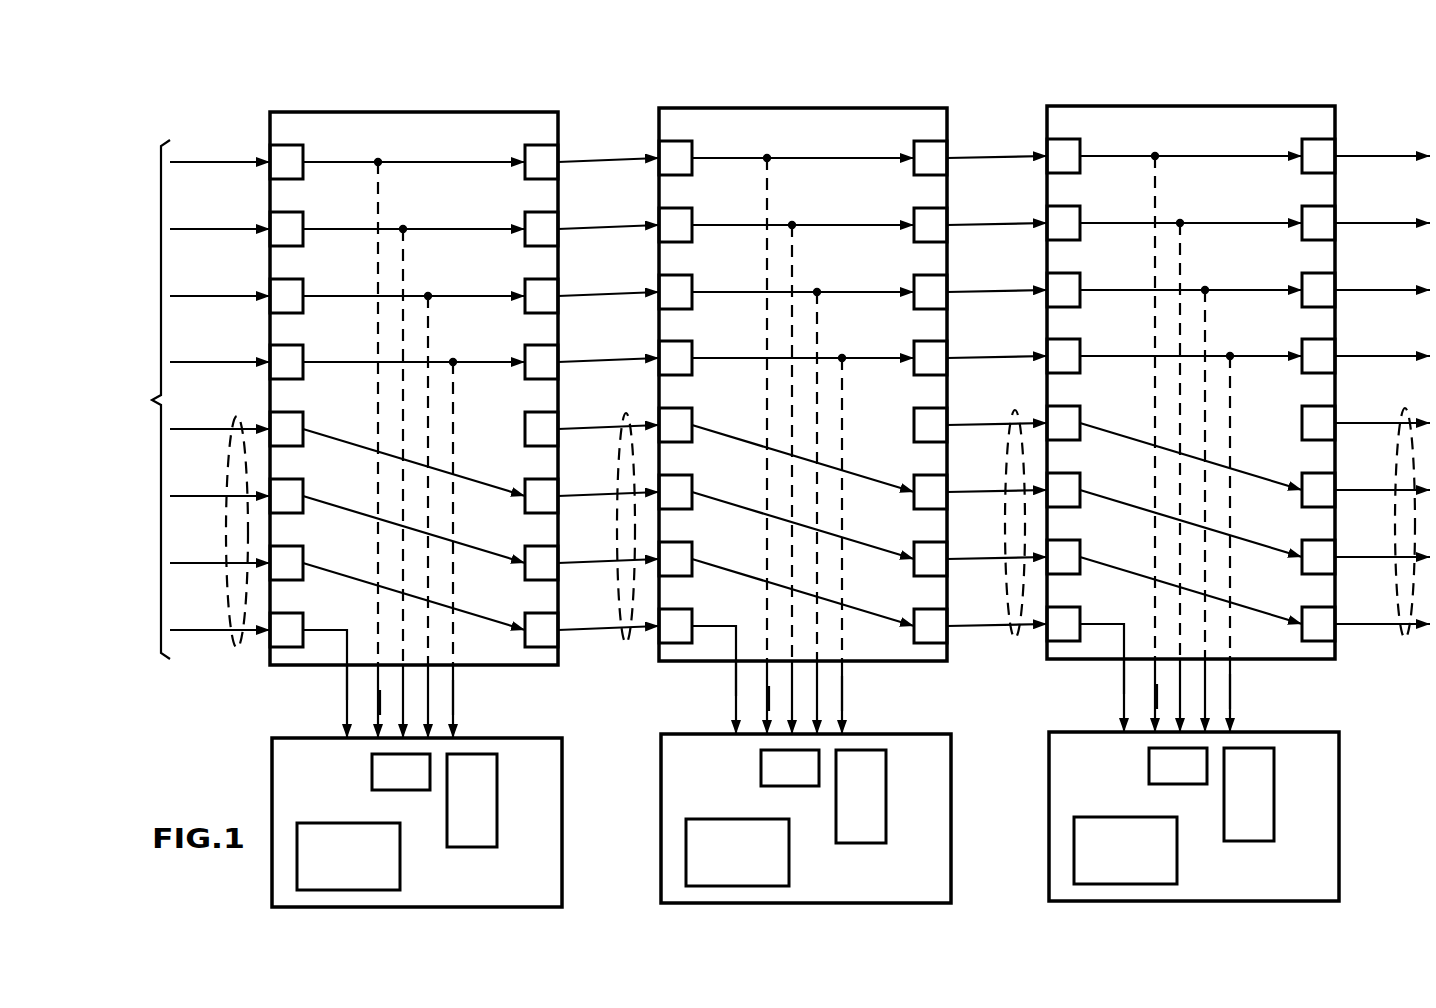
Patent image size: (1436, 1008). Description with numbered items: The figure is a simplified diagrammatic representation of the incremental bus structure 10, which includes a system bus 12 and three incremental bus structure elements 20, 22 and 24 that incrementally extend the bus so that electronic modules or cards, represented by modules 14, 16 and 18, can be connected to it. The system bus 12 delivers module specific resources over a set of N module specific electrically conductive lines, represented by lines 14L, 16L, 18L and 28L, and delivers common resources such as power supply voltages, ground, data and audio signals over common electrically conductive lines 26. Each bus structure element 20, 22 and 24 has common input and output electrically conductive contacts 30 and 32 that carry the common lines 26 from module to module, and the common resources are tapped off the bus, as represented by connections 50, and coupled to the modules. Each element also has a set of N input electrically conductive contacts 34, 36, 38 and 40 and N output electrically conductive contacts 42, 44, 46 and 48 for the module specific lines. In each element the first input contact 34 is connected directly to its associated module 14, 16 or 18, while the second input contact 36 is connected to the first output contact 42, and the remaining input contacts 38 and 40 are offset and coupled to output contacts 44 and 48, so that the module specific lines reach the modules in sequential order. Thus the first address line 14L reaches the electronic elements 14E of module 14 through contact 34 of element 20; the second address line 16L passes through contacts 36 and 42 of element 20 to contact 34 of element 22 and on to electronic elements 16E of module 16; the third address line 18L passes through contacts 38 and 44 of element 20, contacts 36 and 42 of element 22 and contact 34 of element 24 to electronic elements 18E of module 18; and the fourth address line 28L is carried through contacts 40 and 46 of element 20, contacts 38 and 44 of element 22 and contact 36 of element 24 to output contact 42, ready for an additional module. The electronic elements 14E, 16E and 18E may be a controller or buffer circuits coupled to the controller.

The incremental bus structure 10 is at (1110, 84).
The system bus 12 is at (137, 431).
The module 14 is at (271, 775).
The electronic elements 14E is at (372, 775).
The first address line 14L is at (200, 627).
The module 16 is at (774, 818).
The electronic elements 16E is at (812, 818).
The second address line 16L is at (200, 560).
The module 18 is at (1162, 816).
The electronic elements 18E is at (1200, 816).
The third address line 18L is at (200, 493).
The incremental bus structure element 20 is at (559, 126).
The incremental bus structure element 22 is at (831, 370).
The incremental bus structure element 24 is at (1197, 360).
The common electrically conductive lines 26 is at (212, 159).
The fourth address line 28L is at (200, 426).
The common input electrically conductive contacts 30 is at (303, 150).
The common output electrically conductive contacts 32 is at (525, 148).
The first input electrically conductive contact 34 is at (303, 618).
The second input electrically conductive contact 36 is at (303, 551).
The input electrically conductive contact 38 is at (303, 484).
The input electrically conductive contact 40 is at (303, 417).
The first output electrically conductive contact 42 is at (525, 616).
The output electrically conductive contact 44 is at (525, 549).
The output electrically conductive contact 46 is at (525, 482).
The output electrically conductive contact 48 is at (525, 415).
The connections 50 is at (378, 158).